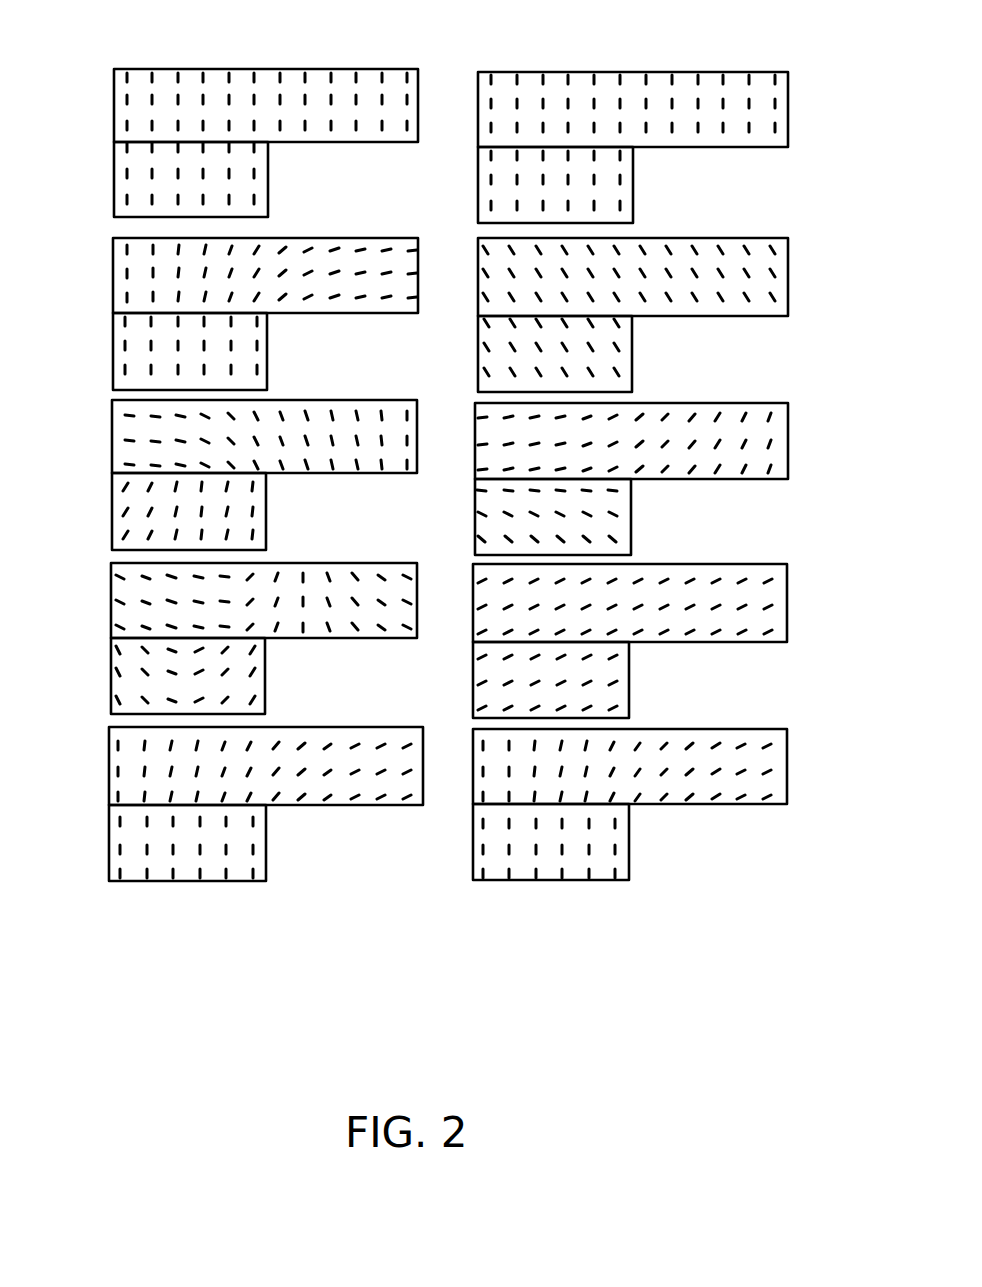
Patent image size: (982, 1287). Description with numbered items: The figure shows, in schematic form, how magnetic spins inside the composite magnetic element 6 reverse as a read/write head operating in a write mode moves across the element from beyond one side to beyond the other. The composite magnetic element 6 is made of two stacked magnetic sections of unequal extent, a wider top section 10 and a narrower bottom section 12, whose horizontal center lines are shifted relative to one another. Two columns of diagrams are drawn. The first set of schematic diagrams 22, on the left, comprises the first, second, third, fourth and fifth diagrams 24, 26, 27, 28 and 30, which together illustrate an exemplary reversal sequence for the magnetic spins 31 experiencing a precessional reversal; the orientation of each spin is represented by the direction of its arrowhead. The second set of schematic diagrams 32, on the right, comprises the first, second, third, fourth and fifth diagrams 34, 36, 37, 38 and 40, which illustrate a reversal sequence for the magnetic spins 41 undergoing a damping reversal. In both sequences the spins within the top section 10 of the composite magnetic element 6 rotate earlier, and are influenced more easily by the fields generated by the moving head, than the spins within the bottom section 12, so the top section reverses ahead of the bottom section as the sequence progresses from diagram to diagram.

The composite magnetic element 6 is at (311, 60).
The top section 10 is at (478, 125).
The bottom section 12 is at (268, 195).
The first set of schematic diagrams 22 is at (241, 523).
The first diagram 24 is at (114, 150).
The second diagram 26 is at (113, 326).
The third diagram 27 is at (112, 448).
The fourth diagram 28 is at (111, 652).
The fifth diagram 30 is at (109, 805).
The magnetic spins 31 is at (357, 98).
The second set of schematic diagrams 32 is at (667, 548).
The first diagram 34 is at (790, 130).
The second diagram 36 is at (790, 290).
The third diagram 37 is at (788, 450).
The fourth diagram 38 is at (788, 597).
The fifth diagram 40 is at (788, 765).
The magnetic spins 41 is at (775, 125).